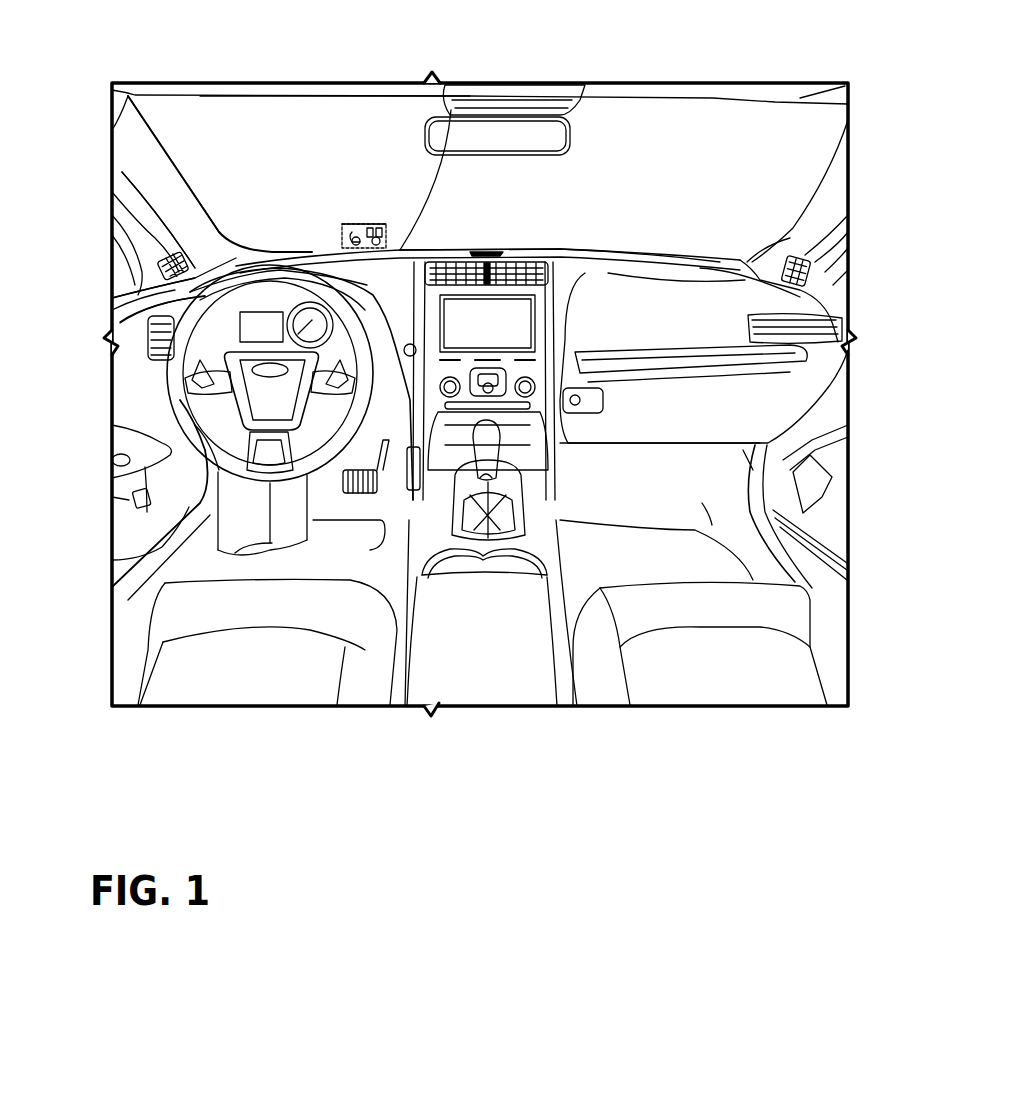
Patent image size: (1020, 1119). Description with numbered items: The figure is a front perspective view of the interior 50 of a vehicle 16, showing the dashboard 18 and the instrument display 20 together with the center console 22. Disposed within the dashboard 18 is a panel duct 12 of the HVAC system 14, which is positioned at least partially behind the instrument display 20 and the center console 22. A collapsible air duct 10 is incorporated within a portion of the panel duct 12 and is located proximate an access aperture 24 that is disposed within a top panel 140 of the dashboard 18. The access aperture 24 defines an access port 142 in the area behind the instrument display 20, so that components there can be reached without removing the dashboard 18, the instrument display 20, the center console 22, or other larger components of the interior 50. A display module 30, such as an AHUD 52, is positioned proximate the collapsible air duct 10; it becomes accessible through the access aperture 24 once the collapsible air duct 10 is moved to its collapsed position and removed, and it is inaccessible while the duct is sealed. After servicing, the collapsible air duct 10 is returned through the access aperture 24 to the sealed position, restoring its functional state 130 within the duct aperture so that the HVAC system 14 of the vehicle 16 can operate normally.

The collapsible air duct 10 is at (180, 297).
The panel duct 12 is at (596, 266).
The HVAC system 14 is at (545, 257).
The vehicle 16 is at (270, 88).
The dashboard 18 is at (673, 275).
The instrument display 20 is at (258, 326).
The center console 22 is at (507, 327).
The access aperture 24 is at (451, 110).
The display module 30 is at (288, 252).
The interior 50 is at (224, 187).
The AHUD 52 is at (339, 224).
The functional state 130 is at (296, 250).
The top panel 140 is at (373, 440).
The access port 142 is at (365, 244).